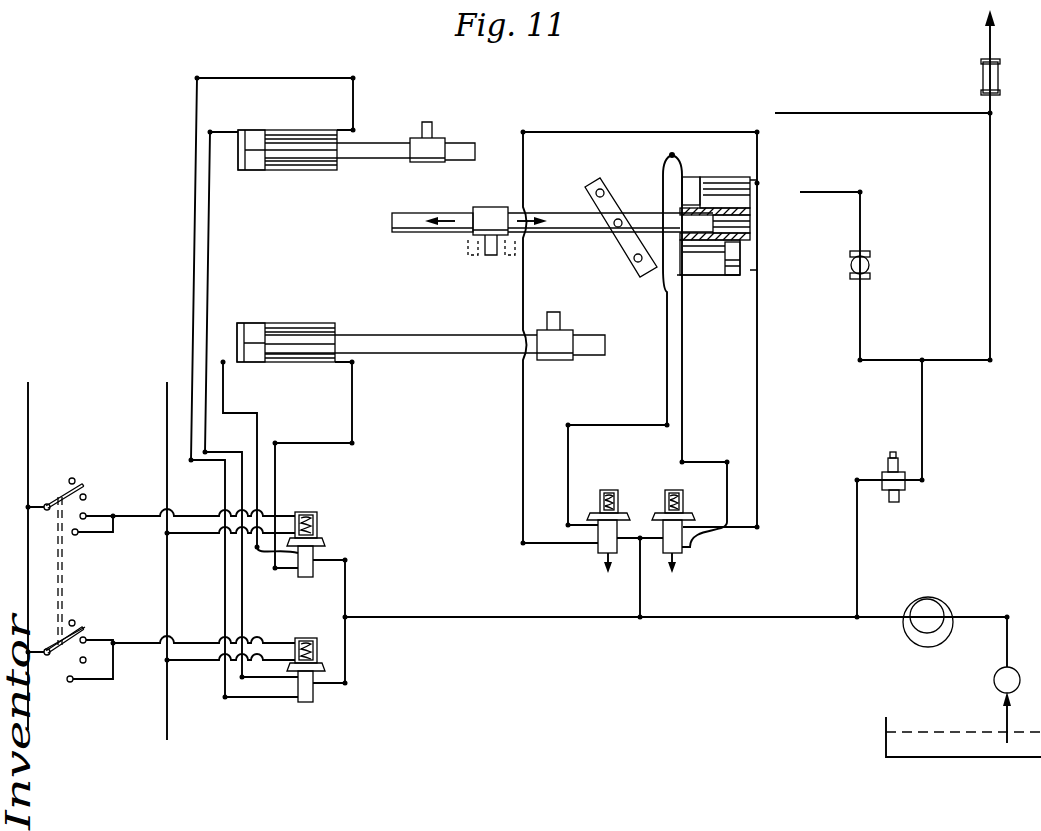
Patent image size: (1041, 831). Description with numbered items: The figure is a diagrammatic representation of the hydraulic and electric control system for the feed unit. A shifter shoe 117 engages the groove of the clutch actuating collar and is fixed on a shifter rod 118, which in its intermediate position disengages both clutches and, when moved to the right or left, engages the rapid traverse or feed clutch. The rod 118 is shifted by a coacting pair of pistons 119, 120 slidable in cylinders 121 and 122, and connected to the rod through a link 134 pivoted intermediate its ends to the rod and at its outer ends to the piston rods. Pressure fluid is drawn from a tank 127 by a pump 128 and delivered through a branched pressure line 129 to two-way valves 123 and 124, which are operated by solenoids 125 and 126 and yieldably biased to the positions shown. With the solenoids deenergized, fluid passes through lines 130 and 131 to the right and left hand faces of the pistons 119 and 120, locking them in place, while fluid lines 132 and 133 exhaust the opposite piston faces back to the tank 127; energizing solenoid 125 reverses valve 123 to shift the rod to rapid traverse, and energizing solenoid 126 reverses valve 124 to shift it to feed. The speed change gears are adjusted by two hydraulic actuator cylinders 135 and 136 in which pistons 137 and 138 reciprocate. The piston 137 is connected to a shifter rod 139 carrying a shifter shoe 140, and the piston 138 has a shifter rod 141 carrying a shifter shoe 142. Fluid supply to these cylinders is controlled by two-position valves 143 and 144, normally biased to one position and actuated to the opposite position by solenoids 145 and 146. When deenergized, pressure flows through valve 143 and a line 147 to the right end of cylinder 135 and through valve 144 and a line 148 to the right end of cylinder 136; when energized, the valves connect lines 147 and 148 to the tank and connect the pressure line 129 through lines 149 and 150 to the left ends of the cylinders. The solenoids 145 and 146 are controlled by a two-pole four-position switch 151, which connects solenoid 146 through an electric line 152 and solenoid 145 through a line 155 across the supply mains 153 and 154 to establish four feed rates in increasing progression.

The shifter shoe 117 is at (488, 207).
The shifter rod 118 is at (585, 232).
The piston 119 is at (691, 180).
The piston 120 is at (742, 250).
The cylinder 121 is at (733, 172).
The cylinder 122 is at (705, 278).
The two-way valve 123 is at (590, 553).
The two-way valve 124 is at (695, 554).
The solenoid 125 is at (608, 490).
The solenoid 126 is at (668, 491).
The tank 127 is at (886, 740).
The pump 128 is at (950, 607).
The pressure line 129 is at (780, 623).
The fluid line 130 is at (520, 498).
The fluid line 131 is at (684, 445).
The fluid line 132 is at (566, 451).
The fluid line 133 is at (758, 468).
The link 134 is at (600, 181).
The hydraulic actuator cylinder 135 is at (300, 365).
The hydraulic actuator cylinder 136 is at (297, 171).
The piston 137 is at (255, 333).
The piston 138 is at (258, 137).
The shifter rod 139 is at (405, 345).
The shifter shoe 140 is at (567, 335).
The shifter rod 141 is at (380, 153).
The shifter shoe 142 is at (433, 146).
The two-position valve 143 is at (313, 555).
The two-position valve 144 is at (313, 697).
The solenoid 145 is at (320, 523).
The solenoid 146 is at (320, 648).
The line 147 is at (352, 408).
The line 148 is at (353, 112).
The line 149 is at (228, 365).
The line 150 is at (225, 130).
The two-pole four-position switch 151 is at (61, 668).
The electric line 152 is at (118, 643).
The supply main 153 is at (30, 723).
The supply main 154 is at (167, 720).
The line 155 is at (115, 514).